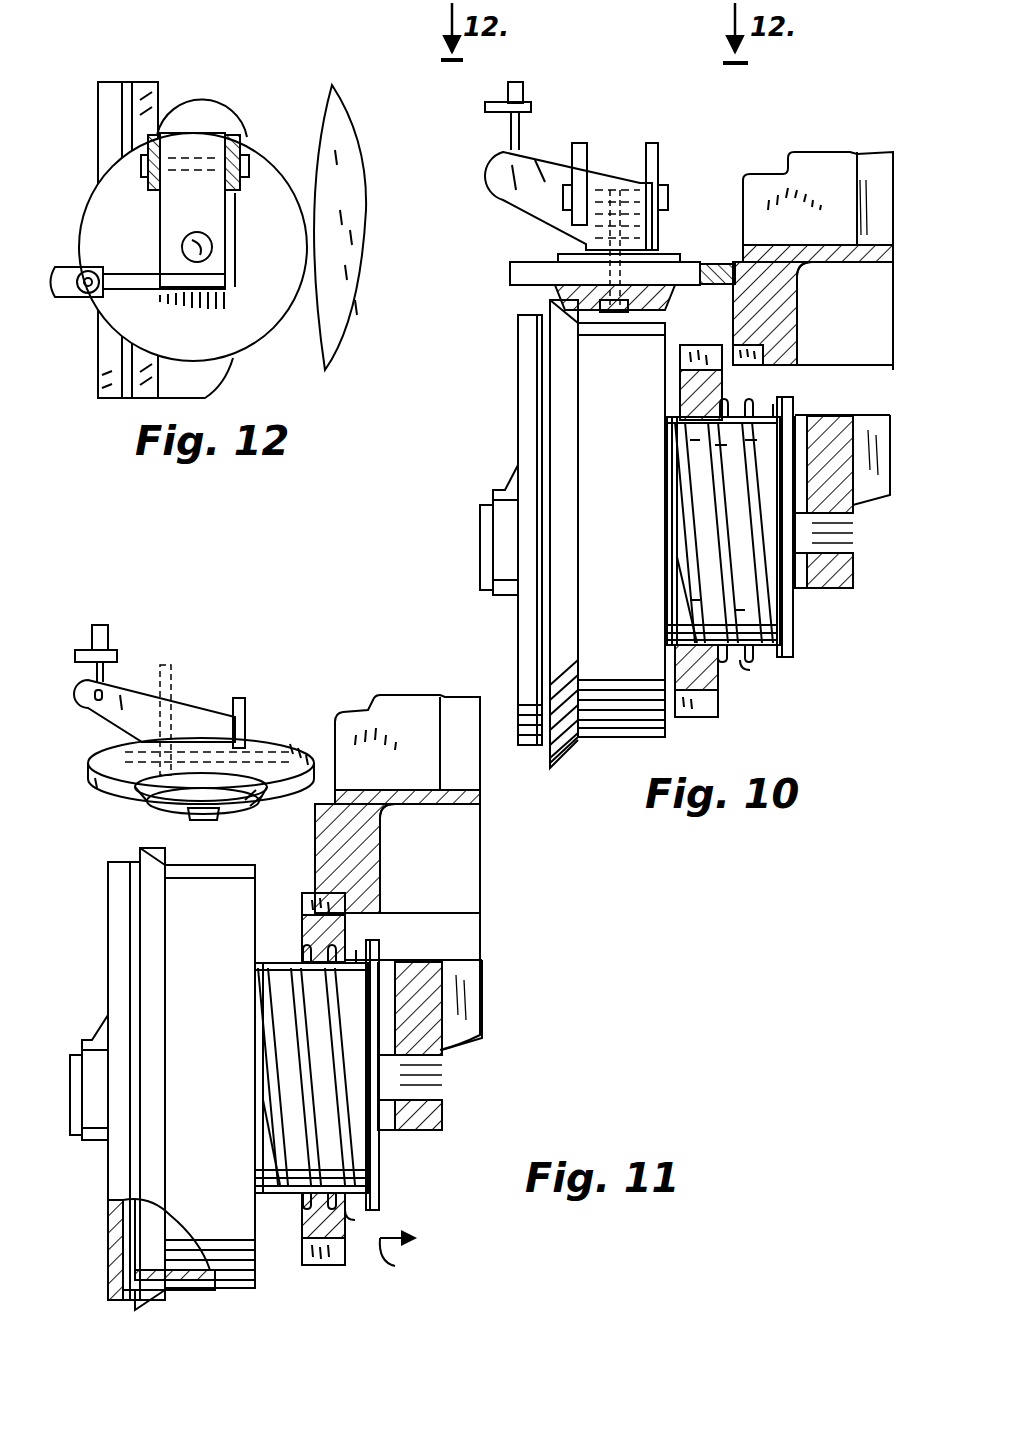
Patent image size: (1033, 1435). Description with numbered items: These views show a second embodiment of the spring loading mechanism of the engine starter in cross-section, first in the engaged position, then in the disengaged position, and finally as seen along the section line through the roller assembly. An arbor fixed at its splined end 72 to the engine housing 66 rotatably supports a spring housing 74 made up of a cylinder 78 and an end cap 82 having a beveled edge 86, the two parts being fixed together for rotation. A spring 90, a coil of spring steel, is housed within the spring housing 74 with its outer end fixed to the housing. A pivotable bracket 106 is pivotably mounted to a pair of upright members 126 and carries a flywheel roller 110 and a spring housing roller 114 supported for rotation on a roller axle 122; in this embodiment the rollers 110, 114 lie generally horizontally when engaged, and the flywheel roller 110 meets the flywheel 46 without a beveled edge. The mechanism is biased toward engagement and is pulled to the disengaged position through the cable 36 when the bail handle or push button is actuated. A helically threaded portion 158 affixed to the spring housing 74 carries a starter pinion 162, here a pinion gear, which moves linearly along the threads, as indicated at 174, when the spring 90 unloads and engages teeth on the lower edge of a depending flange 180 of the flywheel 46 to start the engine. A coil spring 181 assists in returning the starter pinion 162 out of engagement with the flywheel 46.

In FIG. 10, the cable 36 is at (517, 92).
In FIG. 11, the cable 36 is at (100, 624).
In FIG. 10, the flywheel 46 is at (820, 180).
In FIG. 11, the flywheel 46 is at (345, 835).
In FIG. 10, the engine housing 66 is at (815, 588).
In FIG. 11, the engine housing 66 is at (442, 1110).
In FIG. 10, the end 72 is at (853, 522).
In FIG. 11, the end 72 is at (442, 1068).
In FIG. 10, the spring housing 74 is at (504, 450).
In FIG. 12, the spring housing 74 is at (178, 74).
In FIG. 11, the spring housing 74 is at (100, 978).
In FIG. 10, the cylinder 78 is at (655, 730).
In FIG. 11, the cylinder 78 is at (185, 1300).
In FIG. 10, the end cap 82 is at (516, 588).
In FIG. 11, the end cap 82 is at (106, 1237).
In FIG. 10, the beveled edge 86 is at (573, 750).
In FIG. 11, the beveled edge 86 is at (145, 1318).
In FIG. 11, the spring 90 is at (160, 1270).
In FIG. 10, the pivotable bracket 106 is at (545, 188).
In FIG. 12, the pivotable bracket 106 is at (213, 208).
In FIG. 11, the pivotable bracket 106 is at (185, 712).
In FIG. 10, the flywheel roller 110 is at (522, 268).
In FIG. 12, the flywheel roller 110 is at (266, 295).
In FIG. 11, the flywheel roller 110 is at (292, 746).
In FIG. 10, the spring housing roller 114 is at (555, 298).
In FIG. 11, the spring housing roller 114 is at (225, 818).
In FIG. 10, the roller axle 122 is at (650, 242).
In FIG. 12, the roller axle 122 is at (182, 247).
In FIG. 11, the roller axle 122 is at (195, 814).
In FIG. 10, the upright members 126 is at (652, 147).
In FIG. 12, the upright members 126 is at (200, 110).
In FIG. 11, the upright members 126 is at (165, 672).
In FIG. 10, the helically threaded portion 158 is at (760, 630).
In FIG. 11, the helically threaded portion 158 is at (345, 1165).
In FIG. 10, the starter pinion 162 is at (706, 690).
In FIG. 11, the starter pinion 162 is at (302, 1240).
In FIG. 11, the linear movement of starter pinion 174 is at (418, 1257).
In FIG. 10, the depending flange 180 is at (757, 305).
In FIG. 11, the depending flange 180 is at (372, 870).
In FIG. 10, the coil spring 181 is at (746, 664).
In FIG. 11, the coil spring 181 is at (352, 1215).